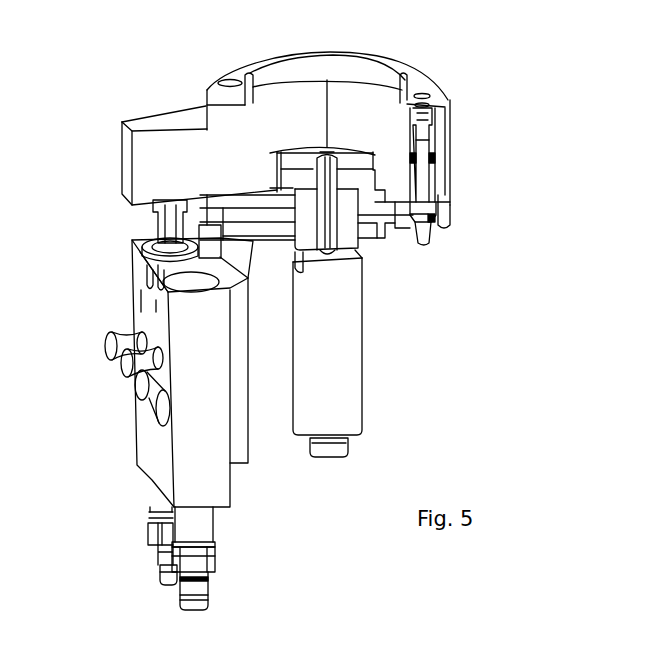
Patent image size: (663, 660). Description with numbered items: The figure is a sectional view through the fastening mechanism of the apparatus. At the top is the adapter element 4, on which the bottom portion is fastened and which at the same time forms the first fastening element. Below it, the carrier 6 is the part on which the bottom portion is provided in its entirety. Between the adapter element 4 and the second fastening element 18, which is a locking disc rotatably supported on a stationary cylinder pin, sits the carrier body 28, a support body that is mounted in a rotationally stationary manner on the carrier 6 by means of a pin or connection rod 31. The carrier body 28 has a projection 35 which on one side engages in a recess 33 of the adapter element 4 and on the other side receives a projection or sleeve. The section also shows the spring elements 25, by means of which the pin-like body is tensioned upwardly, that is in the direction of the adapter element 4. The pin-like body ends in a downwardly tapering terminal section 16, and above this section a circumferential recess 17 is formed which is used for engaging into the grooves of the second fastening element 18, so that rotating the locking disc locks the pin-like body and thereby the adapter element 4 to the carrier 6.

The adapter element 4 is at (373, 72).
The carrier 6 is at (343, 313).
The downwardly tapering terminal section 16 is at (428, 244).
The circumferential recess 17 is at (435, 221).
The second fastening element 18 is at (163, 217).
The spring elements 25 is at (435, 160).
The carrier body 28 is at (437, 203).
The connection rod 31 is at (332, 222).
The recess 33 is at (278, 157).
The projection 35 is at (277, 182).